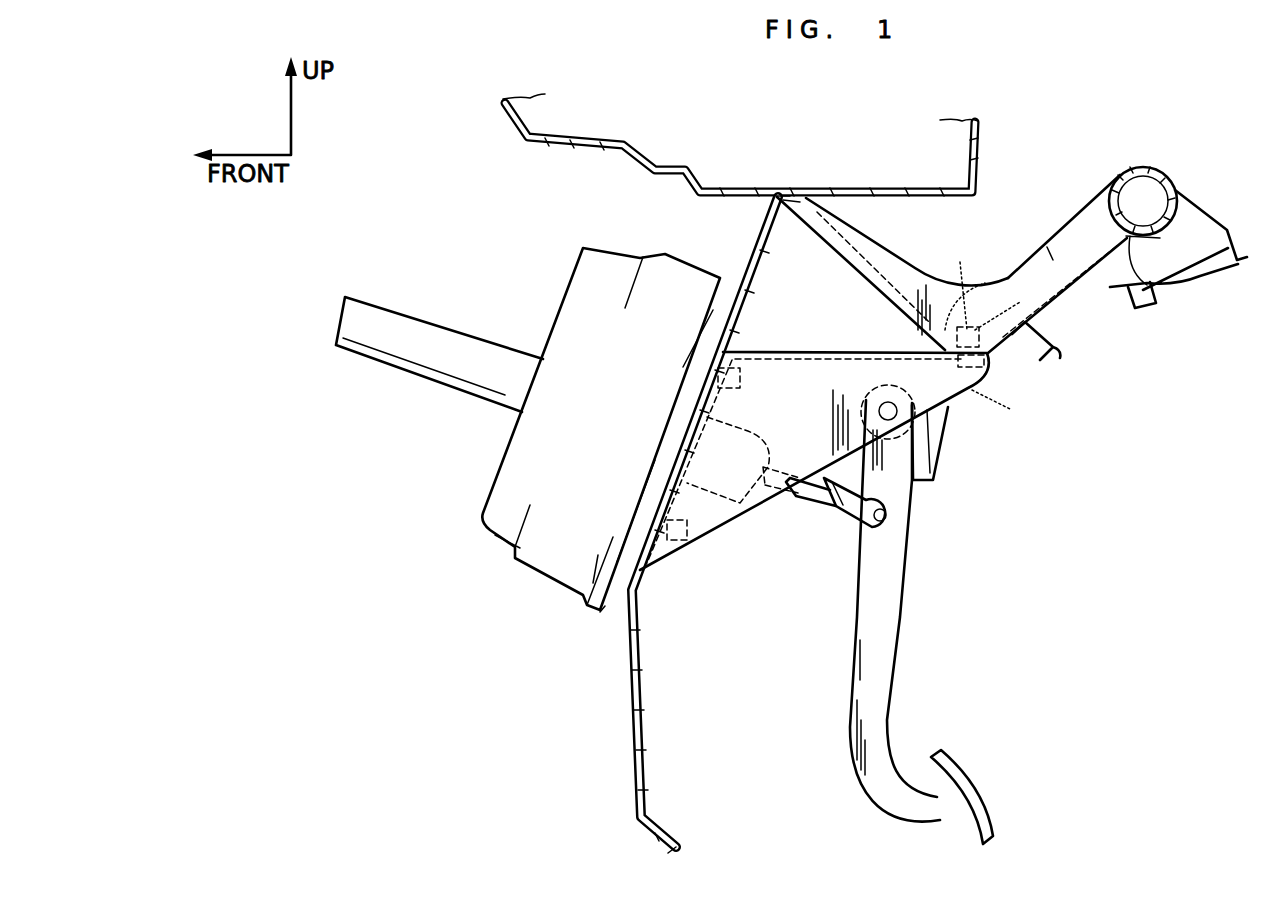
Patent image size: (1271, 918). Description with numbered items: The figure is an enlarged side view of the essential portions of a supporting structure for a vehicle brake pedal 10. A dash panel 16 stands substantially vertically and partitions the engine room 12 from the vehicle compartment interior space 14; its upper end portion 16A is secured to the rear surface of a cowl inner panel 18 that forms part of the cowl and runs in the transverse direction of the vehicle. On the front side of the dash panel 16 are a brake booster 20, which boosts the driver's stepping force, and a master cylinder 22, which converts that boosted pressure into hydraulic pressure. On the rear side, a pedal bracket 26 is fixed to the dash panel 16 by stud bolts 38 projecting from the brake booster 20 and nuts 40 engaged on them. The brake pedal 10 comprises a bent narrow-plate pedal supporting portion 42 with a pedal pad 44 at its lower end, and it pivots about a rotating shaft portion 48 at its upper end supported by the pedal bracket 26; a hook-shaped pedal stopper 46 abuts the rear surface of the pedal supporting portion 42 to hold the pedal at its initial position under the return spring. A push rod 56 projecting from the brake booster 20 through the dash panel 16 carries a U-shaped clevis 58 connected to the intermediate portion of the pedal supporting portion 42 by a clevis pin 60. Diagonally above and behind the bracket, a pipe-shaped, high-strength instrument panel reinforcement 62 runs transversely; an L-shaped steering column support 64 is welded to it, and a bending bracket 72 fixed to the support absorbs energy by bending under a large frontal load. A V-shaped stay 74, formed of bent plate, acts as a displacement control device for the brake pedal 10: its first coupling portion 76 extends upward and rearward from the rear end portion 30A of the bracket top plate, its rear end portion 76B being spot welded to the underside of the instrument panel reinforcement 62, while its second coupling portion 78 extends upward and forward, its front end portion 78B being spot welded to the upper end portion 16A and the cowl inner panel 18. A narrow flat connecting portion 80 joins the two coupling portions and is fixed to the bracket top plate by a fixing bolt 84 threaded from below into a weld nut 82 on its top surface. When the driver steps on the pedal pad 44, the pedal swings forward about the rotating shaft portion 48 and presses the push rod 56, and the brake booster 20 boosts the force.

The brake pedal 10 is at (924, 614).
The engine room 12 is at (580, 743).
The vehicle compartment interior space 14 is at (738, 743).
The dash panel 16 is at (640, 692).
The upper end portion of the dash panel 16A is at (790, 199).
The cowl inner panel 18 is at (634, 152).
The brake booster 20 is at (486, 488).
The master cylinder 22 is at (408, 373).
The pedal bracket 26 is at (715, 535).
The vehicle rear end portion of the top plate portion 30A is at (918, 352).
The stud bolts 38 is at (690, 543).
The nuts 40 is at (673, 545).
The pedal supporting portion 42 is at (885, 630).
The pedal pad 44 is at (968, 778).
The pedal stopper 46 is at (931, 463).
The rotating shaft portion 48 is at (898, 410).
The push rod 56 is at (806, 498).
The clevis 58 is at (840, 510).
The clevis pin 60 is at (888, 516).
The instrument panel reinforcement 62 is at (1122, 175).
The steering column support 64 is at (1203, 215).
The bending bracket 72 is at (1048, 337).
The stay 74 is at (929, 271).
The first coupling portion 76 is at (1045, 256).
The rear end portion of the first coupling portion 76B is at (1148, 297).
The second coupling portion 78 is at (868, 268).
The front end portion of the second coupling portion 78B is at (792, 206).
The connecting portion 80 is at (990, 370).
The weld nut 82 is at (982, 297).
The fixing bolt 84 is at (993, 408).